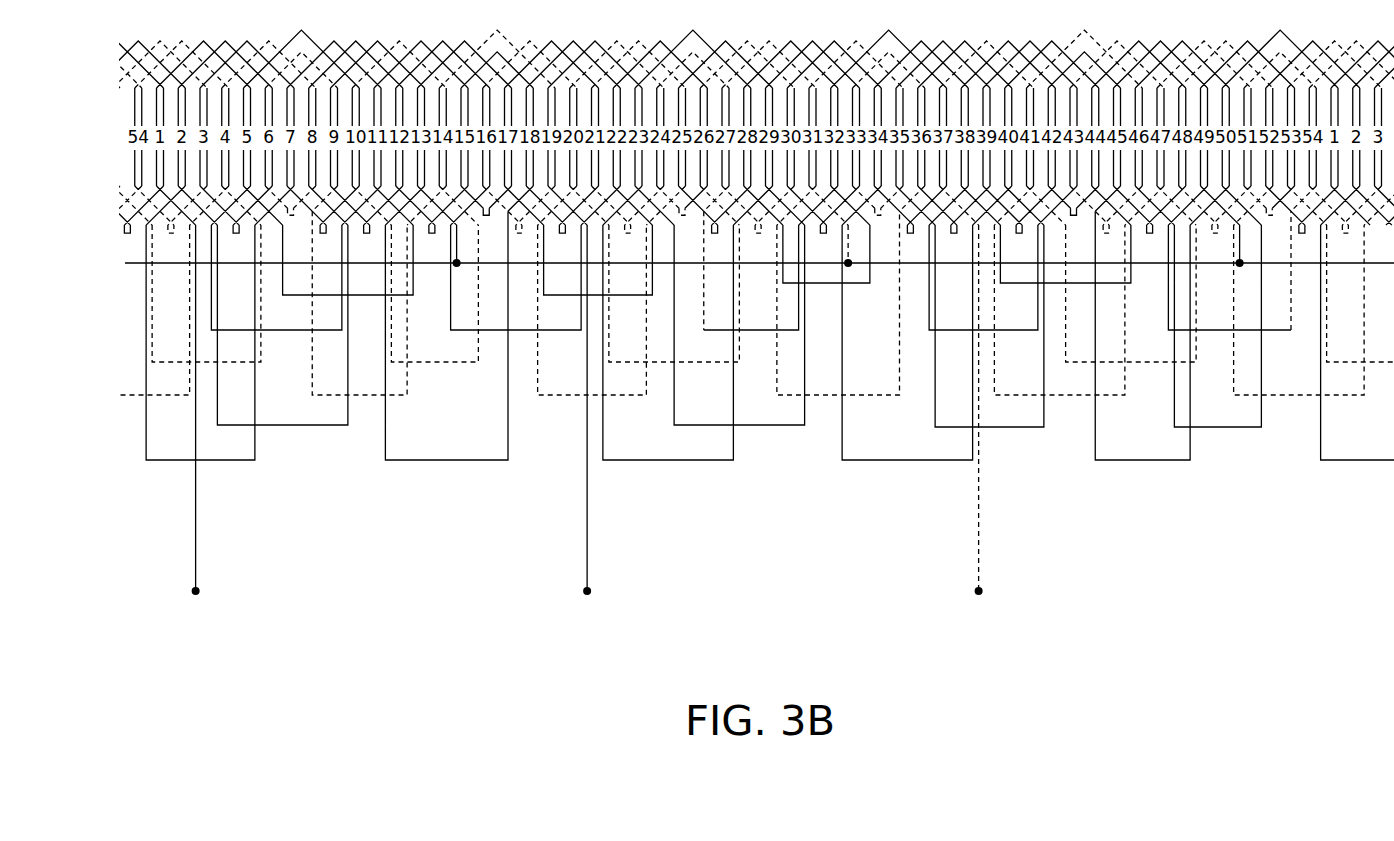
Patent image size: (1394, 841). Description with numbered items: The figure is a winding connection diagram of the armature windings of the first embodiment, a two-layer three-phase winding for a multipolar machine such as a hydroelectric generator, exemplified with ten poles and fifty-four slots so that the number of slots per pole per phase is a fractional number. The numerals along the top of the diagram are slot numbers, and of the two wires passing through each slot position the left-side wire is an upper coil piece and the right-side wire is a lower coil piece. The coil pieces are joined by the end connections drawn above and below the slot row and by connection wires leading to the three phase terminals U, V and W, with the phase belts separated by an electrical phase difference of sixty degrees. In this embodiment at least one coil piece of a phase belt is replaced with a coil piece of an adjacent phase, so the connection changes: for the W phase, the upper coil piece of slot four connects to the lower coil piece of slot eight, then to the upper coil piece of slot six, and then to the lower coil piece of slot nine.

The U-phase winding U is at (195, 426).
The V-phase winding V is at (588, 426).
The W-phase winding W is at (979, 426).